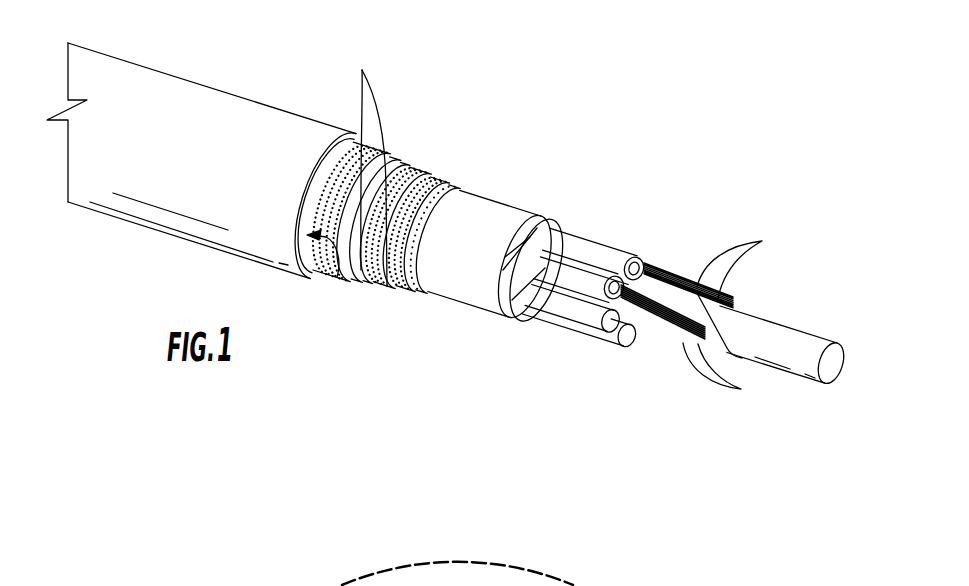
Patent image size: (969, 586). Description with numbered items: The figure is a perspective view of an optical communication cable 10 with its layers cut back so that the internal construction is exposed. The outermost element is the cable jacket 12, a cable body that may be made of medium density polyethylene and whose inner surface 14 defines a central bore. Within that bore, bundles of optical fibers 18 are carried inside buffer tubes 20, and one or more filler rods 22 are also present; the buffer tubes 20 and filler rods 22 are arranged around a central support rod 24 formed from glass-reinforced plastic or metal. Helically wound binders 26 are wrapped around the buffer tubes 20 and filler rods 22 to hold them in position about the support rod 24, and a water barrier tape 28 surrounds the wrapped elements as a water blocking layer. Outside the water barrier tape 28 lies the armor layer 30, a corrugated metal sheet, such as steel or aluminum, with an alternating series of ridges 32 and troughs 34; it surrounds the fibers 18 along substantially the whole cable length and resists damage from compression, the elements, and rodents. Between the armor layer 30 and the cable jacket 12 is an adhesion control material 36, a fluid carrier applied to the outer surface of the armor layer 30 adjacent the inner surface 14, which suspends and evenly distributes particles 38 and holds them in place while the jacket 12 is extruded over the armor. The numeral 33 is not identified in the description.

The cable 10 is at (486, 88).
The cable jacket 12 is at (250, 117).
The inner surface 14 is at (337, 277).
The optical fibers 18 is at (737, 317).
The buffer tubes 20 is at (568, 262).
The filler rods 22 is at (603, 320).
The central support rod 24 is at (833, 355).
The helically wound binders 26 is at (530, 310).
The water barrier tape 28 is at (485, 213).
The armor layer 30 is at (402, 167).
The ridges 32 is at (443, 180).
The tape wrap edge 33 is at (560, 317).
The troughs 34 is at (372, 272).
The adhesion control material 36 is at (362, 270).
The particles 38 is at (308, 188).